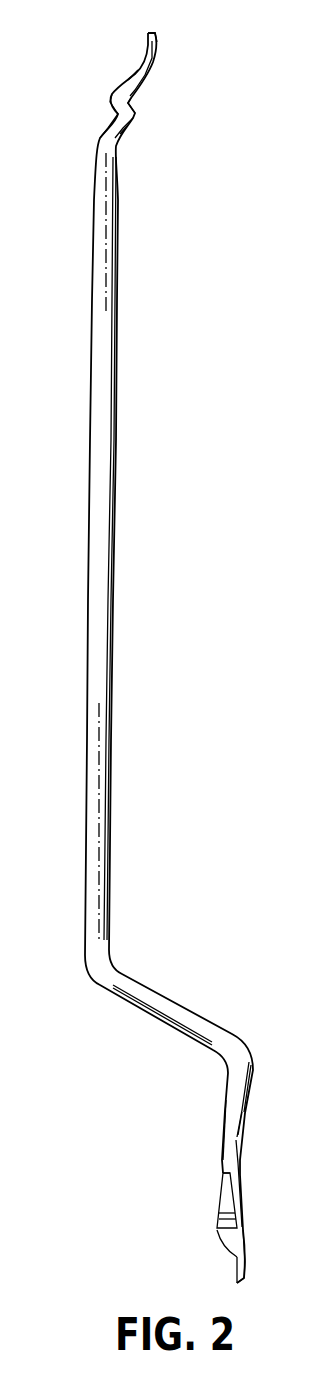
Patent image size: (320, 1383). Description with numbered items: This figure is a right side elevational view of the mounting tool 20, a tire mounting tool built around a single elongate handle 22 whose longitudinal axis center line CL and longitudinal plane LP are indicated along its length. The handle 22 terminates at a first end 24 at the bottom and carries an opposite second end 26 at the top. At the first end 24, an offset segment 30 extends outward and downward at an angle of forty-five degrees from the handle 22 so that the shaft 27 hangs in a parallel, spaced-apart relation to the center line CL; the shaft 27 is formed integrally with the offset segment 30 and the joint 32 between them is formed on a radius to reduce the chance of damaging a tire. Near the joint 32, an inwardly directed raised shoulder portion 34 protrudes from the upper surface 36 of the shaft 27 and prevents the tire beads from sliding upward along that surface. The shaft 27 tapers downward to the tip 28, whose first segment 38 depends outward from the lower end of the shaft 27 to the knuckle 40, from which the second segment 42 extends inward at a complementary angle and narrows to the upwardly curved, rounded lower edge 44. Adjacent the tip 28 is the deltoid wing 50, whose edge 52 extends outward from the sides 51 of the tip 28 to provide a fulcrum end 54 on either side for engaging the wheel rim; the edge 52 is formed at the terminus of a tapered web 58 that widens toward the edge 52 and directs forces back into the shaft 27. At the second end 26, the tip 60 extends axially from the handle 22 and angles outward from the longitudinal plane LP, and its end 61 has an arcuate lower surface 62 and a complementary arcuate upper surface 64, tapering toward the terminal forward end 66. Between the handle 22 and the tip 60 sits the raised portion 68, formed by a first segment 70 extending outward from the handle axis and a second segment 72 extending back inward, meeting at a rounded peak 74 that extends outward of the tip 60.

The mounting tool 20 is at (156, 400).
The elongate handle 22 is at (102, 610).
The first end 24 is at (176, 1177).
The second end 26 is at (184, 78).
The shaft 27 is at (214, 1113).
The tip 28 is at (228, 1259).
The offset segment 30 is at (170, 1003).
The joint 32 is at (243, 1047).
The raised shoulder portion 34 is at (253, 1088).
The upper surface 36 is at (243, 1127).
The first segment 38 is at (238, 1193).
The knuckle 40 is at (250, 1237).
The second segment 42 is at (245, 1267).
The lower edge 44 is at (238, 1283).
The wing 50 is at (211, 1207).
The sides of tip 51 is at (228, 1165).
The edge 52 is at (215, 1237).
The fulcrum end 54 is at (233, 1225).
The tapered web 58 is at (225, 1195).
The tip 60 is at (155, 85).
The end 61 is at (132, 82).
The lower surface 62 is at (143, 62).
The upper surface 64 is at (153, 62).
The terminal forward end 66 is at (148, 30).
The raised portion 68 is at (140, 137).
The first segment 70 is at (115, 122).
The second segment 72 is at (123, 107).
The peak 74 is at (137, 115).
The longitudinal plane LP is at (107, 240).
The center line CL is at (98, 853).